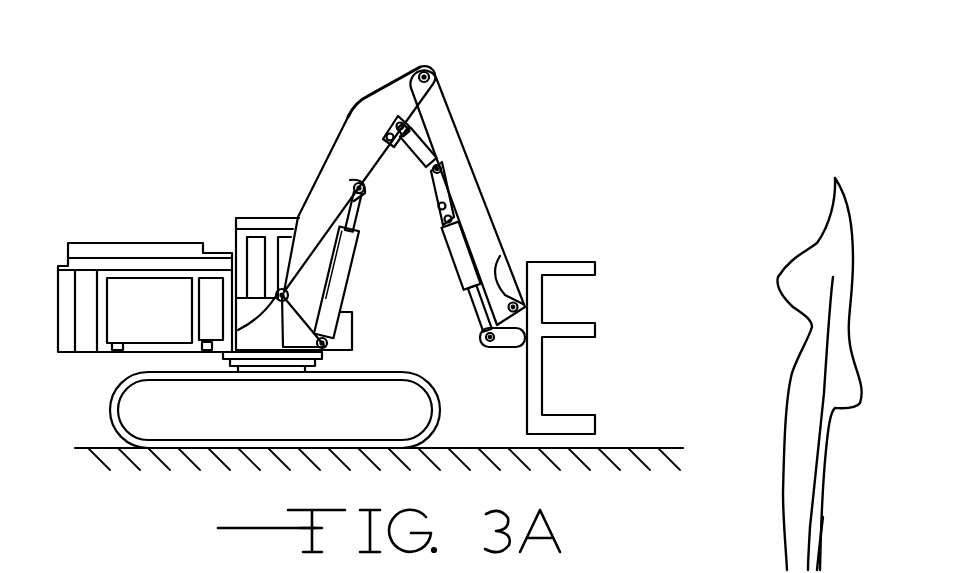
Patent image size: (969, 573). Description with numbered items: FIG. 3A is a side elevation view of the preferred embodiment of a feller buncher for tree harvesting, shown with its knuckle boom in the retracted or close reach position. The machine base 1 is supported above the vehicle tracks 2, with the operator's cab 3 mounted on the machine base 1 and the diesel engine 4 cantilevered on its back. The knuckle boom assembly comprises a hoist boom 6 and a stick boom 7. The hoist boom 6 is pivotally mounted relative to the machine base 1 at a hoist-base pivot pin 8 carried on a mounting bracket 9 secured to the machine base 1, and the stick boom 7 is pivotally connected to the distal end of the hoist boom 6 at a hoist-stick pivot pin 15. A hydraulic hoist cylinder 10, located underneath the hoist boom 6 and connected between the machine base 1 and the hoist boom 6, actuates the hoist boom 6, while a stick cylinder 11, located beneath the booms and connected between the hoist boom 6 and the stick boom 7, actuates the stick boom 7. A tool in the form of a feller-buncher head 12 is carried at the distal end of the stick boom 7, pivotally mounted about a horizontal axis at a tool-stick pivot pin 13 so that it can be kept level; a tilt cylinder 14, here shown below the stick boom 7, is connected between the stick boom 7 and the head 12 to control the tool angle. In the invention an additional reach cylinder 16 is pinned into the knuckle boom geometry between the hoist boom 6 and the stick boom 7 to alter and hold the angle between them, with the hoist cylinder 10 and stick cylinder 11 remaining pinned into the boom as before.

The machine base 1 is at (118, 352).
The vehicle tracks 2 is at (110, 410).
The operator's cab 3 is at (270, 217).
The diesel engine 4 is at (128, 298).
The hoist boom 6 is at (342, 157).
The stick boom 7 is at (474, 183).
The hoist-base pivot pin 8 is at (276, 335).
The mounting bracket 9 is at (262, 333).
The hydraulic hoist cylinder 10 is at (343, 293).
The stick cylinder 11 is at (418, 183).
The feller-buncher head 12 is at (597, 405).
The tool-stick pivot pin 13 is at (502, 258).
The tilt cylinder 14 is at (455, 257).
The hoist-stick pivot pin 15 is at (428, 68).
The reach cylinder 16 is at (423, 140).